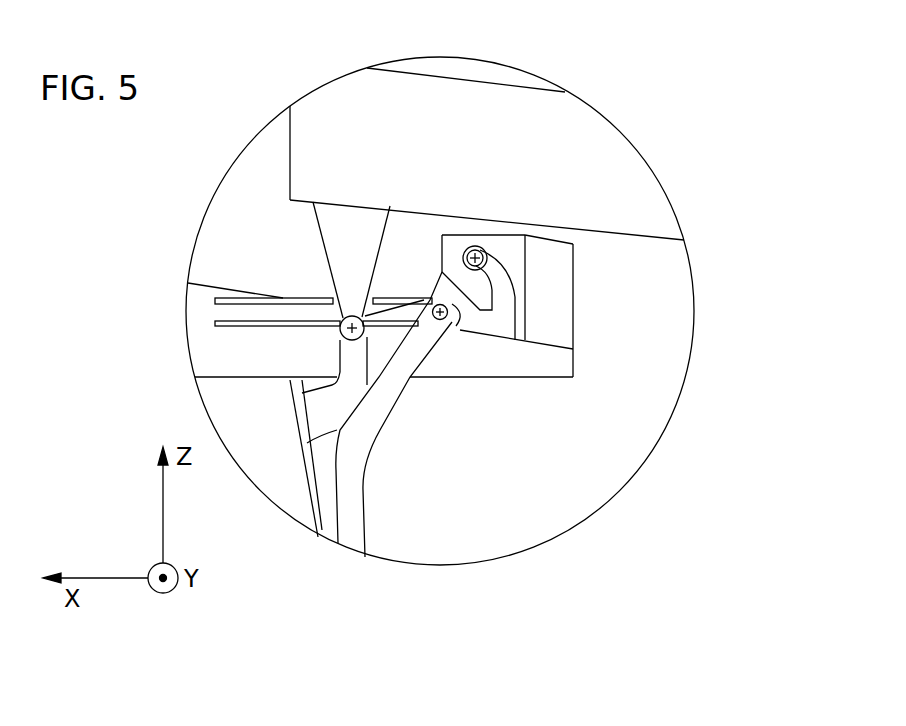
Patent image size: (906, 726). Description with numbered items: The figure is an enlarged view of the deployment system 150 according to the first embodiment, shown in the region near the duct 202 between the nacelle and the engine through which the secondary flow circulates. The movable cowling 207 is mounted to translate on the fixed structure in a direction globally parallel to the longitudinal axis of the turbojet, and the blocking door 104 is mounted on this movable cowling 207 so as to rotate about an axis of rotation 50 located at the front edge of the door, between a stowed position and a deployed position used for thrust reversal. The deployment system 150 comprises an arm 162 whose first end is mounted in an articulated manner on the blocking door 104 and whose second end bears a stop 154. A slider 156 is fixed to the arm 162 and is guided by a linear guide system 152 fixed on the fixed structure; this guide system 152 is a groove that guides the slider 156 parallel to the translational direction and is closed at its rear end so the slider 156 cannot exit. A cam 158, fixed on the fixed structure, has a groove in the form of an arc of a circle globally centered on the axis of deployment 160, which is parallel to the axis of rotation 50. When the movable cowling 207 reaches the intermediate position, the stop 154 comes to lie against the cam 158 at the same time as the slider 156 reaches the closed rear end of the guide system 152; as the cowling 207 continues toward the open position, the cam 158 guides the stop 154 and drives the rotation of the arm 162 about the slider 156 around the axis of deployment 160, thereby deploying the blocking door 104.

The deployment system 150 is at (674, 108).
The movable cowling 207 is at (637, 164).
The stop 154 is at (474, 246).
The axis of rotation 50 is at (352, 328).
The linear guide system 152 is at (232, 313).
The cam 158 is at (508, 253).
The axis of deployment 160 is at (443, 328).
The slider 156 is at (450, 322).
The duct 202 is at (509, 528).
The blocking door 104 is at (308, 503).
The arm 162 is at (346, 528).